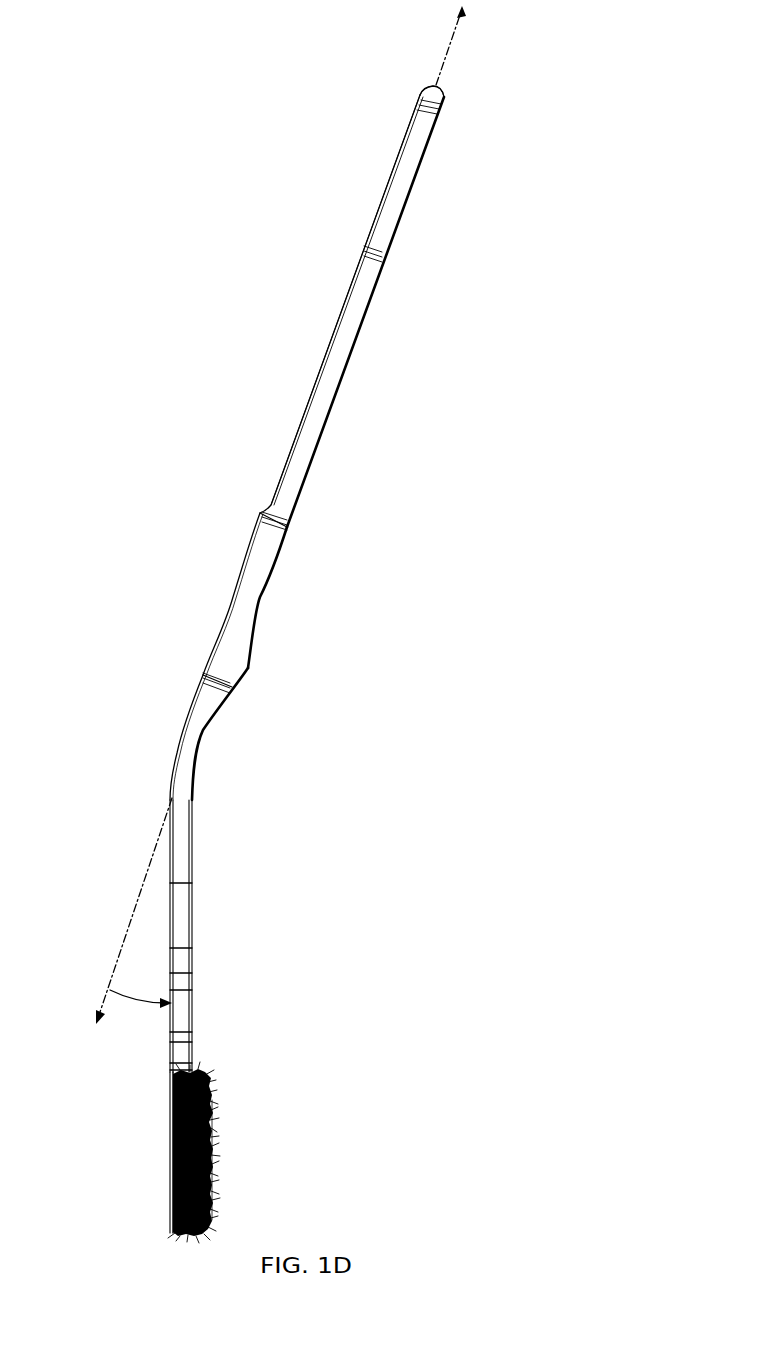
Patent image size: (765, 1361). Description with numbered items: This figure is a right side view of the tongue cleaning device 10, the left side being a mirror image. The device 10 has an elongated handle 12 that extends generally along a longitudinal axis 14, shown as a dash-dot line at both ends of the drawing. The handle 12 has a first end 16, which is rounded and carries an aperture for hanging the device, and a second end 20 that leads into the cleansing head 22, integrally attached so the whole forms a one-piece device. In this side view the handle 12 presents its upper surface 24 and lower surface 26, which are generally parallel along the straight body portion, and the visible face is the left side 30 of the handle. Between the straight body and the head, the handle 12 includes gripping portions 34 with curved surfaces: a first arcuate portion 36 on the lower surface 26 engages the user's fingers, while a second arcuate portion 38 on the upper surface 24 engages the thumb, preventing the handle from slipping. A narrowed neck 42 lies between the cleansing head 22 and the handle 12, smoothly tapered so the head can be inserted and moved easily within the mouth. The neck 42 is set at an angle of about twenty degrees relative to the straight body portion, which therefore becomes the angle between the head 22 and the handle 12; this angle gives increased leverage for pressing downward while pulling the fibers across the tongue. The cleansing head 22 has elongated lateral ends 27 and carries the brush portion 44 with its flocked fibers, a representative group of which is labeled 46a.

The tongue cleaning device 10 is at (534, 332).
The handle 12 is at (384, 229).
The longitudinal axis 14 is at (443, 69).
The first end 16 is at (446, 123).
The second end 20 is at (240, 817).
The cleansing head 22 is at (176, 1175).
The upper surface 24 is at (363, 327).
The lower surface 26 is at (330, 338).
The lateral ends 27 is at (173, 1142).
The left side 30 is at (303, 448).
The gripping portions 34 is at (178, 614).
The first arcuate portion 36 is at (262, 517).
The second arcuate portion 38 is at (252, 670).
The neck 42 is at (188, 983).
The brush portion 44 is at (237, 1139).
The bristles 46a is at (213, 1172).